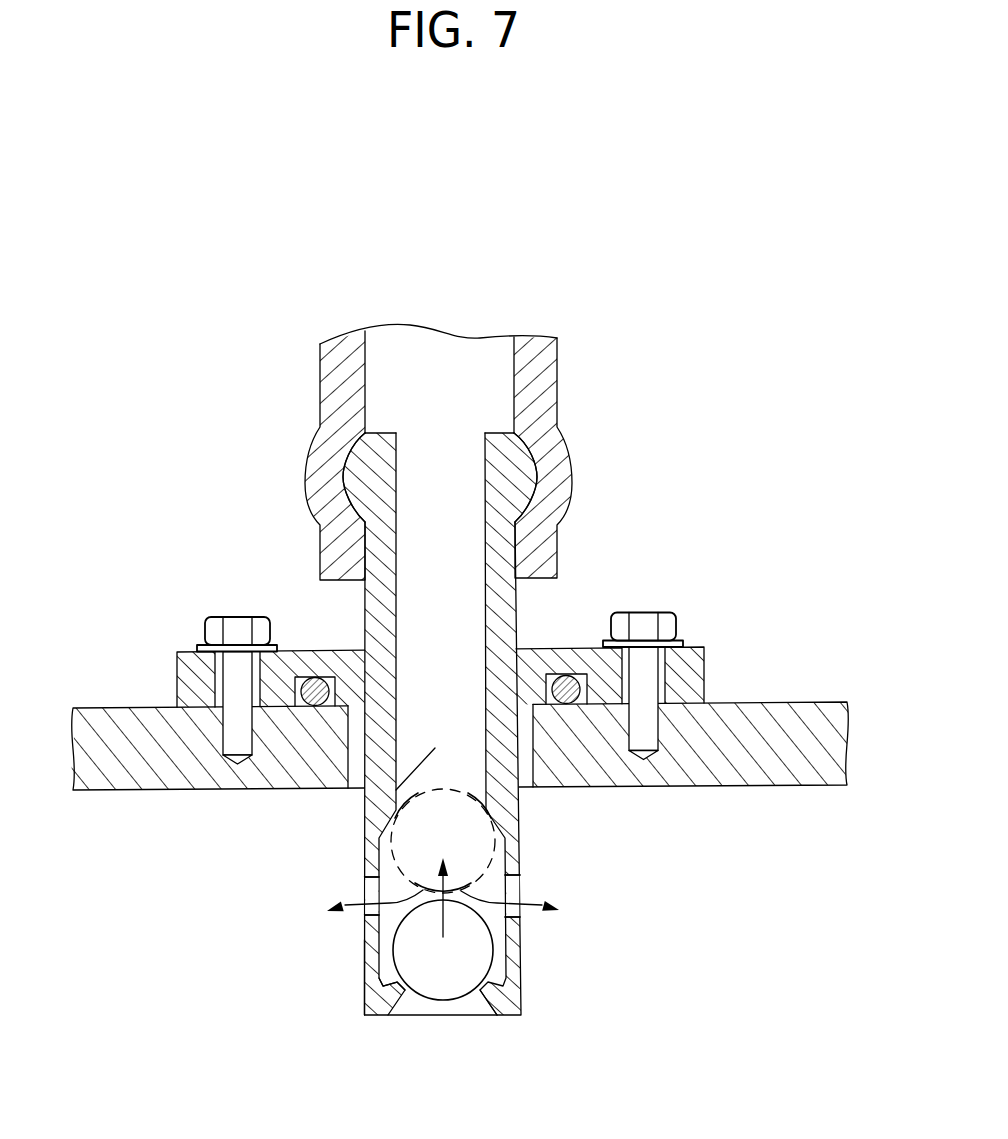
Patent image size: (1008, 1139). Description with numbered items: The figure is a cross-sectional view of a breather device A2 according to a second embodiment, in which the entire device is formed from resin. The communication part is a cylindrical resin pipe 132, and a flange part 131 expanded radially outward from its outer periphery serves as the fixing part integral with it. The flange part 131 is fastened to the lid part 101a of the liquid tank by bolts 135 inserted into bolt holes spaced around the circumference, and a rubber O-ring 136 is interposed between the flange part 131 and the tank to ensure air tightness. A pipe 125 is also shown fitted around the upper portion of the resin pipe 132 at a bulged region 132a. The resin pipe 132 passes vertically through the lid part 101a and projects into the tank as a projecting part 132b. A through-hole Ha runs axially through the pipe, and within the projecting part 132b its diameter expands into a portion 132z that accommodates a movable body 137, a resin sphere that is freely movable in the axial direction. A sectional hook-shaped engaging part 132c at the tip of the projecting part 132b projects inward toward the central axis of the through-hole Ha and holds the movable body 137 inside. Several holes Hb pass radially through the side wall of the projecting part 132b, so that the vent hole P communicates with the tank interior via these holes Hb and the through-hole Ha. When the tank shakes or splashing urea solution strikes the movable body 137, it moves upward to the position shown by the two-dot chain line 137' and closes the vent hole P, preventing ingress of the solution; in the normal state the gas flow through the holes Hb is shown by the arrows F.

The breather device A2 is at (196, 361).
The lid part 101a is at (808, 704).
The outer pipe 125 is at (558, 365).
The flange part 131 is at (695, 648).
The resin pipe 132 is at (517, 602).
The bulge portion of pipe 132a is at (530, 470).
The projecting part 132b is at (365, 952).
The engaging part 132c is at (405, 993).
The expanded-diameter portion 132z is at (520, 835).
The bolt 135 is at (225, 617).
The O-ring 136 is at (569, 674).
The movable body 137 is at (490, 950).
The movable body after moving 137' is at (490, 841).
The arrows showing gas flow F is at (363, 902).
The through-hole Ha is at (478, 1002).
The holes Hb is at (365, 877).
The vent hole P is at (363, 797).